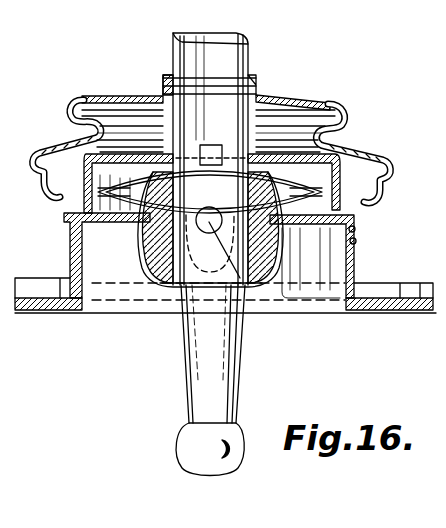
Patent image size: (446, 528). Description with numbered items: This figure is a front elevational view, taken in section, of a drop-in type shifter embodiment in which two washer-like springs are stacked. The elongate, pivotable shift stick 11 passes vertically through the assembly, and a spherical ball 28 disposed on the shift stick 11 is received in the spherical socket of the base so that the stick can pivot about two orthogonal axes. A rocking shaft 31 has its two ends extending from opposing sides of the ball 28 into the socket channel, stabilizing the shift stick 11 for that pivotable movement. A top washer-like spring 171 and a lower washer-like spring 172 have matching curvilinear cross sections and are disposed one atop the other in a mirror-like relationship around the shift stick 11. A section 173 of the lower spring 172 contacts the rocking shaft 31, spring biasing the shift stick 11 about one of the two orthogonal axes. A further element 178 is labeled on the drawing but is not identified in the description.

The shift stick 11 is at (248, 52).
The spherical ball 28 is at (152, 250).
The rocking shaft 31 is at (243, 290).
The top washer-like spring 171 is at (252, 195).
The lower washer-like spring 172 is at (298, 228).
The section of the lower spring 173 is at (191, 185).
The boot lip 178 is at (138, 175).